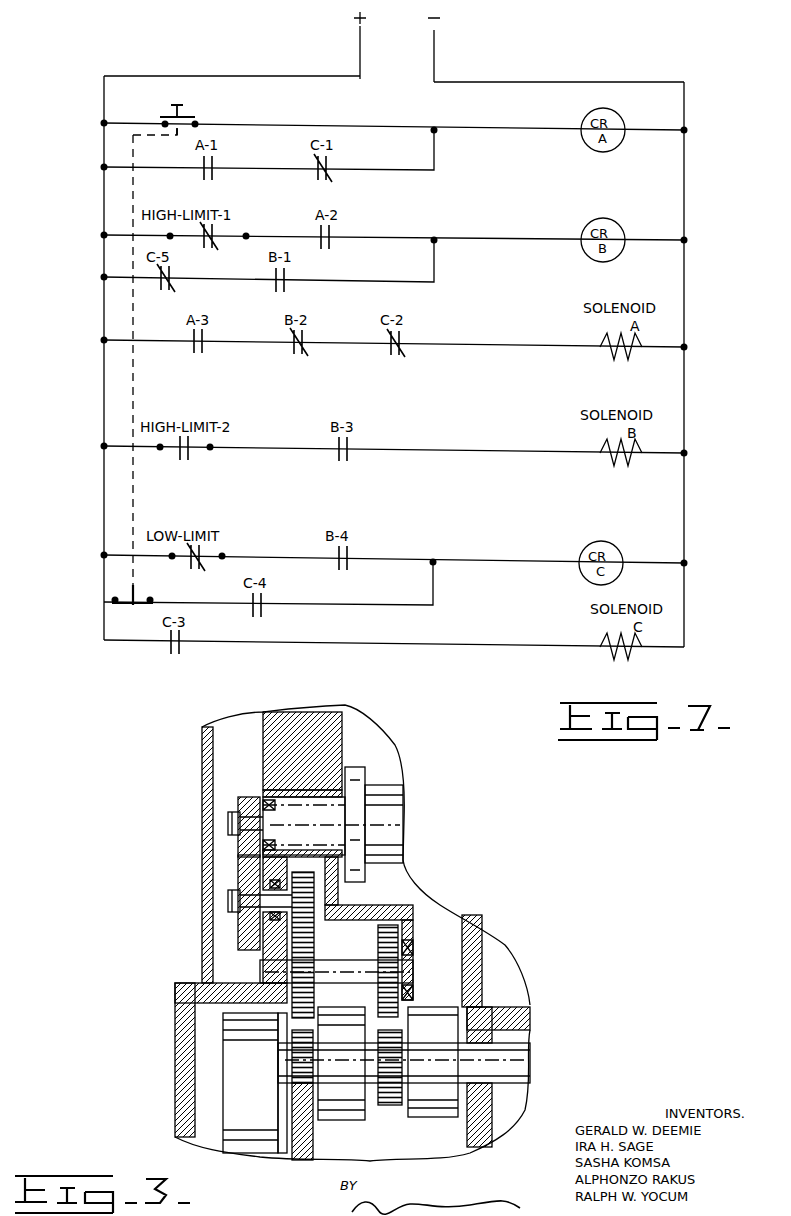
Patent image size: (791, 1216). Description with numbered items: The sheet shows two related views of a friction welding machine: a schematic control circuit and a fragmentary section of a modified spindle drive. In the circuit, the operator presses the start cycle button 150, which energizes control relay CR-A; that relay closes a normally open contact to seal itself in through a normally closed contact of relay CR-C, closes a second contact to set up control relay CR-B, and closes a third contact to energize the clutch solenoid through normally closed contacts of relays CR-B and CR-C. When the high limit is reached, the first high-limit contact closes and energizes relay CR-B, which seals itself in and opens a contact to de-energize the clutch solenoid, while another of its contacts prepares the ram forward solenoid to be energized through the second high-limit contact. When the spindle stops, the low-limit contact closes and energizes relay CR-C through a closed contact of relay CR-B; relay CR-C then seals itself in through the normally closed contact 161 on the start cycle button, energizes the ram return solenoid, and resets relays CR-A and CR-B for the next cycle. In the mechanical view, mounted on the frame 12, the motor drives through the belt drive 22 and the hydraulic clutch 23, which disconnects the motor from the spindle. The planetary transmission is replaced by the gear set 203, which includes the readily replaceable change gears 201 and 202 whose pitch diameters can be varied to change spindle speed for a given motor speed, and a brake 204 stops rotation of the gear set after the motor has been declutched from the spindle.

In FIG. 7, the start cycle button 150 is at (190, 113).
In FIG. 7, the normally closed contact 161 is at (140, 597).
In FIG. 3, the hydraulic clutch 23 is at (377, 790).
In FIG. 3, the change gear 201 is at (255, 808).
In FIG. 3, the change gear 202 is at (250, 935).
In FIG. 3, the gear set 203 is at (452, 980).
In FIG. 3, the frame 12 is at (500, 1030).
In FIG. 3, the belt drive 22 is at (228, 1120).
In FIG. 3, the brake 204 is at (440, 1117).